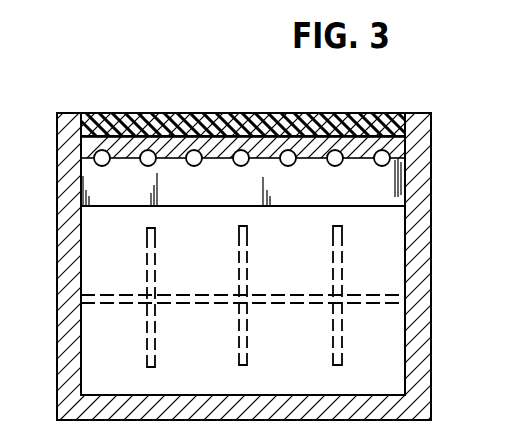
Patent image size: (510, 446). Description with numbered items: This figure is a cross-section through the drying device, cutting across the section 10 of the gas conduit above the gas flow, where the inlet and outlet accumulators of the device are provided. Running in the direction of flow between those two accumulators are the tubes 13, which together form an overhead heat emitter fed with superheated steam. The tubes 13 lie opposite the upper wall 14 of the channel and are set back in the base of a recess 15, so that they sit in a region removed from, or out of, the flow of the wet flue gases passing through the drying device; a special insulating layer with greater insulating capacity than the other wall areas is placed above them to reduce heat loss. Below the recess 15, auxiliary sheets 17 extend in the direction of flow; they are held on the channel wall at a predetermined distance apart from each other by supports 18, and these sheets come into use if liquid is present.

The section of the gas conduit 10 is at (421, 269).
The tubes 13 is at (329, 162).
The upper wall of the channel 14 is at (358, 206).
The recess 15 is at (166, 234).
The auxiliary sheets 17 is at (249, 360).
The supports 18 is at (104, 304).